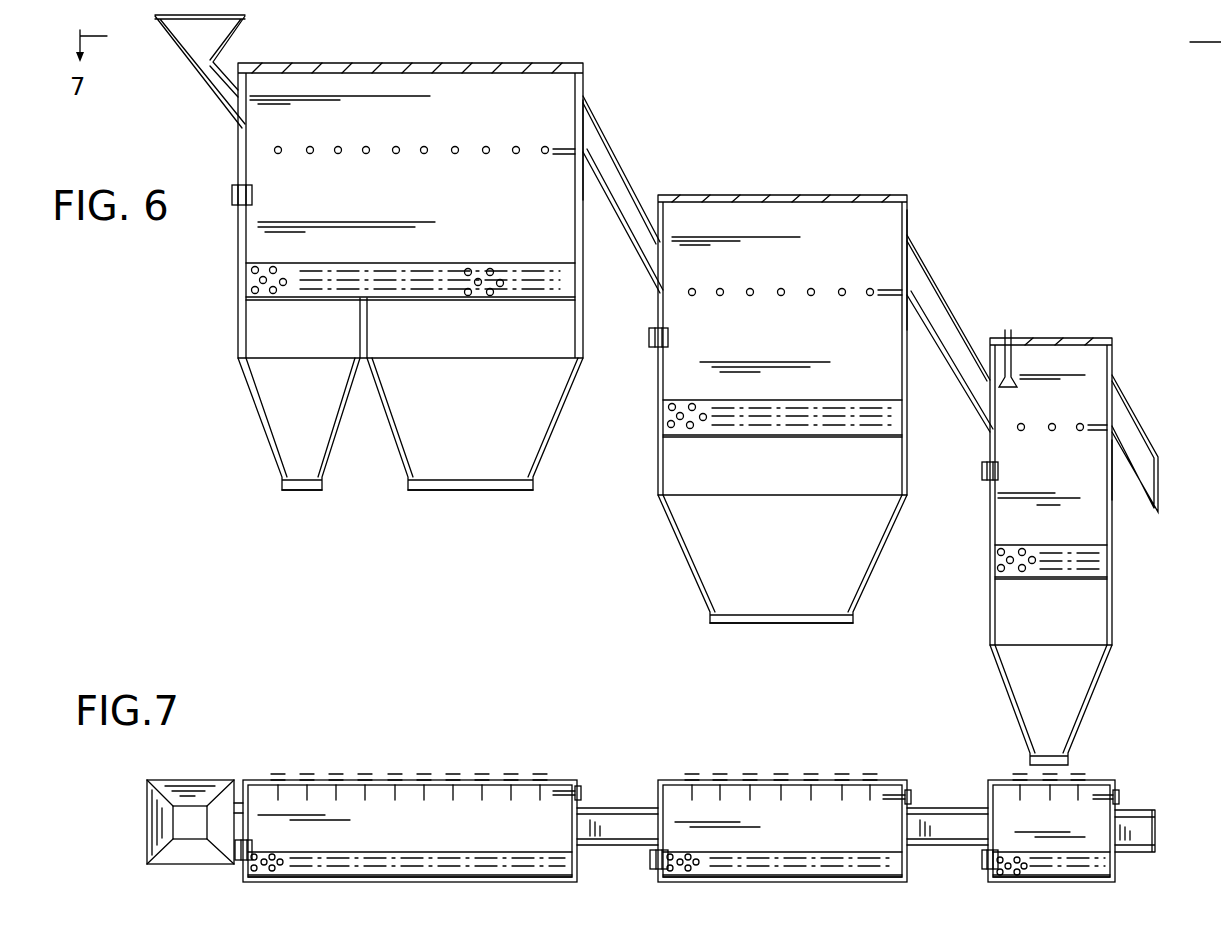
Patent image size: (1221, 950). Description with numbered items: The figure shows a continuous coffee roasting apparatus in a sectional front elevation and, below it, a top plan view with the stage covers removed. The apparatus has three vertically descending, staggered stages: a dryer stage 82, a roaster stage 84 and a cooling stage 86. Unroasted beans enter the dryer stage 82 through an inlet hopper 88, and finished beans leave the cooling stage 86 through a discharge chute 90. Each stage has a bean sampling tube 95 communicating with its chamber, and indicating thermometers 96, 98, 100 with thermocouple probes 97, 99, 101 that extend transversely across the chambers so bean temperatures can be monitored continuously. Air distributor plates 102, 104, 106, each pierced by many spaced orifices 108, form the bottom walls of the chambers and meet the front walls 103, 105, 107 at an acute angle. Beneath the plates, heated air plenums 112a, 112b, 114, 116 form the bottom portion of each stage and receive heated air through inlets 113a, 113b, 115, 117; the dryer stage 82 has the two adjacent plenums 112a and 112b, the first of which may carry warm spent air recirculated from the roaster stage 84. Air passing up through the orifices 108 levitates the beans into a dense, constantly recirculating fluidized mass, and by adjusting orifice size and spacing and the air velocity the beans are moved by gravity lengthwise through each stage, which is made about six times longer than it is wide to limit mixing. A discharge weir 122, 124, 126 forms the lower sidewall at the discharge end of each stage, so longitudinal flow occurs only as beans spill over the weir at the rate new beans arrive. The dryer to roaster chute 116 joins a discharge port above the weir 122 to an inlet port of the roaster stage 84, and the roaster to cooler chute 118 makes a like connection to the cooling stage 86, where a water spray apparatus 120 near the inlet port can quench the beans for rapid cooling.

In FIG. 6, the dryer stage 82 is at (232, 400).
In FIG. 7, the dryer stage 82 is at (278, 754).
In FIG. 6, the roaster stage 84 is at (655, 566).
In FIG. 7, the roaster stage 84 is at (735, 754).
In FIG. 6, the cooling stage 86 is at (980, 670).
In FIG. 7, the cooling stage 86 is at (1142, 770).
In FIG. 6, the inlet hopper 88 is at (170, 46).
In FIG. 7, the inlet hopper 88 is at (210, 866).
In FIG. 6, the discharge chute 90 is at (1128, 402).
In FIG. 7, the discharge chute 90 is at (1138, 853).
In FIG. 6, the bean sampling tube 95 is at (236, 206).
In FIG. 7, the bean sampling tube 95 is at (256, 880).
In FIG. 7, the indicating thermometer 96 is at (580, 792).
In FIG. 6, the thermocouple probe 97 is at (562, 147).
In FIG. 7, the thermocouple probe 97 is at (466, 815).
In FIG. 7, the indicating thermometer 98 is at (910, 795).
In FIG. 6, the thermocouple probe 99 is at (872, 288).
In FIG. 7, the thermocouple probe 99 is at (825, 815).
In FIG. 7, the indicating thermometer 100 is at (1118, 795).
In FIG. 6, the thermocouple probe 101 is at (1090, 432).
In FIG. 7, the thermocouple probe 101 is at (1050, 800).
In FIG. 6, the air distributor plate 102 is at (388, 272).
In FIG. 7, the air distributor plate 102 is at (353, 872).
In FIG. 7, the front wall 103 is at (392, 884).
In FIG. 6, the air distributor plate 104 is at (833, 389).
In FIG. 7, the air distributor plate 104 is at (720, 892).
In FIG. 7, the front wall 105 is at (778, 883).
In FIG. 6, the air distributor plate 106 is at (1080, 575).
In FIG. 7, the air distributor plate 106 is at (1045, 878).
In FIG. 7, the front wall 107 is at (1053, 883).
In FIG. 6, the orifices 108 is at (490, 268).
In FIG. 6, the heated air plenum 112a is at (327, 405).
In FIG. 6, the heated air plenum 112b is at (497, 405).
In FIG. 6, the plenum inlet 113a is at (297, 492).
In FIG. 6, the plenum inlet 113b is at (455, 492).
In FIG. 6, the heated air plenum 114 is at (800, 560).
In FIG. 6, the plenum inlet 115 is at (760, 625).
In FIG. 6, the dryer to roaster chute 116 is at (628, 180).
In FIG. 7, the dryer to roaster chute 116 is at (597, 845).
In FIG. 6, the plenum inlet 117 is at (1068, 765).
In FIG. 6, the roaster to cooler chute 118 is at (948, 307).
In FIG. 7, the roaster to cooler chute 118 is at (965, 845).
In FIG. 6, the water spray apparatus 120 is at (1020, 388).
In FIG. 6, the discharge weir 122 is at (578, 197).
In FIG. 6, the discharge weir 124 is at (900, 316).
In FIG. 6, the discharge weir 126 is at (1105, 483).